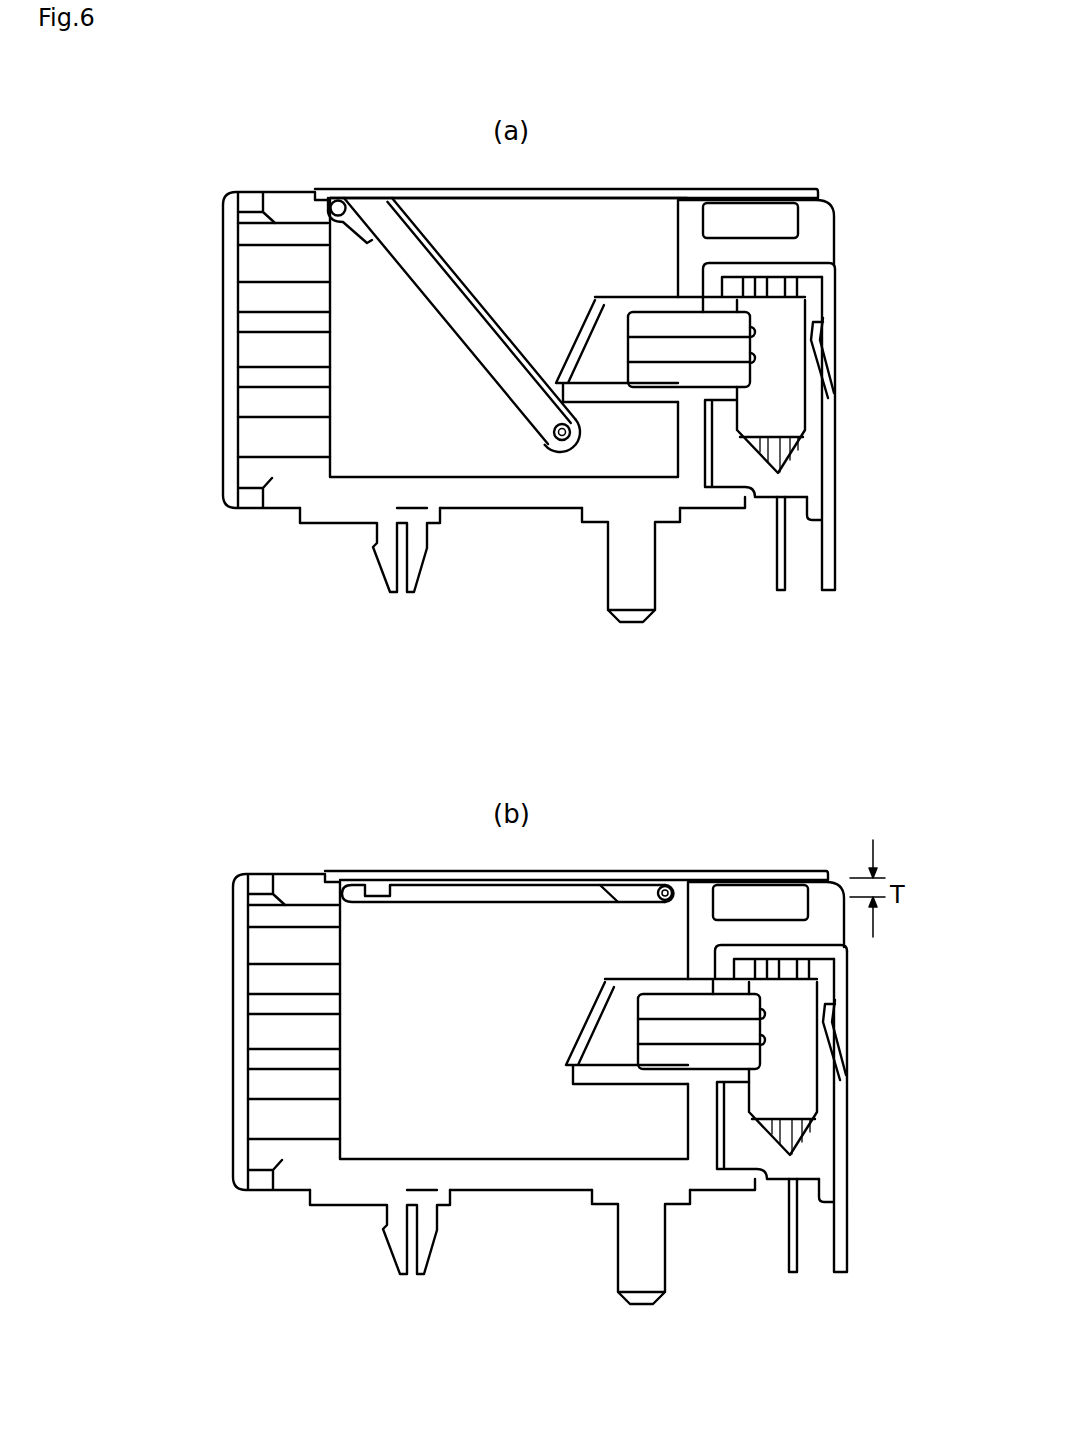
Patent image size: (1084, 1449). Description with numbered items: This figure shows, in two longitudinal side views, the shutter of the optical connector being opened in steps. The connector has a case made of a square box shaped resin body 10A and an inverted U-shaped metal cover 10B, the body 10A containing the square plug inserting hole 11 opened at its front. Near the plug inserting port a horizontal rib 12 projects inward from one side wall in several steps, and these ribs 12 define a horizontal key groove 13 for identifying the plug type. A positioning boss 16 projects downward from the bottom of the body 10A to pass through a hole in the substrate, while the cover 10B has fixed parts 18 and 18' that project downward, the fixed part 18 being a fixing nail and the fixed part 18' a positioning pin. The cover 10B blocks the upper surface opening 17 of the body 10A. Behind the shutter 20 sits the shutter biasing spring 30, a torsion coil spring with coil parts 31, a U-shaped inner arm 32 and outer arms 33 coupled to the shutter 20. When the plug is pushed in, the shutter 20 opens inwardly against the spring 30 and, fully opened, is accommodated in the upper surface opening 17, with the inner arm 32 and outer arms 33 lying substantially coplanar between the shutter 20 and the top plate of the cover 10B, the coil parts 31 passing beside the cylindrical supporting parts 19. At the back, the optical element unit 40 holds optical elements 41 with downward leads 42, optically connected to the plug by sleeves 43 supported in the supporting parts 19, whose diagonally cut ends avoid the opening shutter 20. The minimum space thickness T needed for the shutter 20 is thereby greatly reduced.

The body 10A is at (690, 205).
The cover 10B is at (620, 188).
The plug inserting hole 11 is at (360, 457).
The horizontal rib 12 is at (237, 405).
The horizontal key groove 13 is at (230, 380).
The positioning boss 16 is at (607, 580).
The upper surface opening 17 is at (572, 217).
The fixed part 18 is at (375, 907).
The fixed part 18' is at (855, 788).
The cylindrical supporting part 19 is at (612, 398).
The shutter 20 is at (453, 337).
The shutter biasing spring 30 is at (495, 305).
The coil part 31 is at (572, 447).
The inner arm 32 is at (443, 247).
The outer arm 33 is at (535, 417).
The optical element unit 40 is at (757, 520).
The optical element 41 is at (787, 413).
The lead 42 is at (778, 557).
The sleeve 43 is at (687, 320).